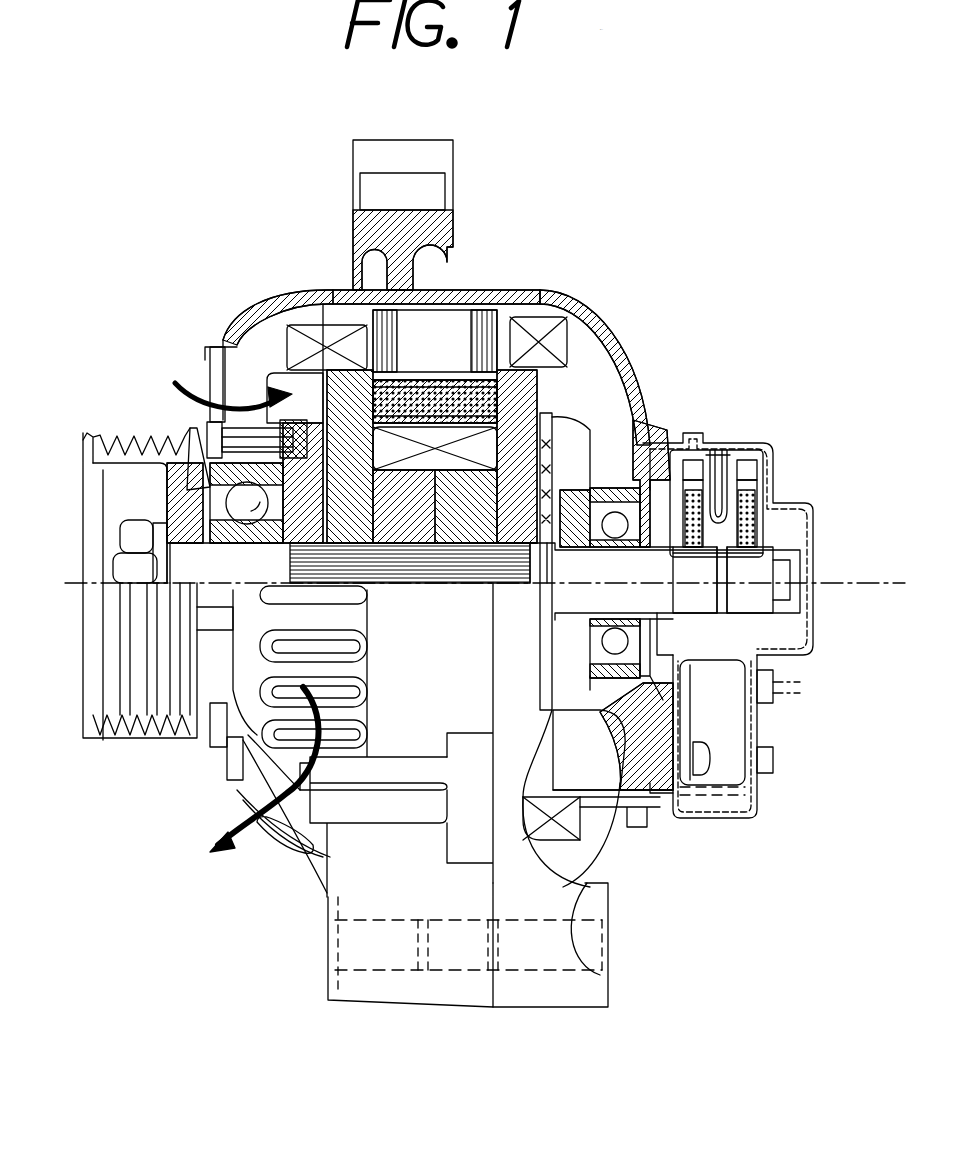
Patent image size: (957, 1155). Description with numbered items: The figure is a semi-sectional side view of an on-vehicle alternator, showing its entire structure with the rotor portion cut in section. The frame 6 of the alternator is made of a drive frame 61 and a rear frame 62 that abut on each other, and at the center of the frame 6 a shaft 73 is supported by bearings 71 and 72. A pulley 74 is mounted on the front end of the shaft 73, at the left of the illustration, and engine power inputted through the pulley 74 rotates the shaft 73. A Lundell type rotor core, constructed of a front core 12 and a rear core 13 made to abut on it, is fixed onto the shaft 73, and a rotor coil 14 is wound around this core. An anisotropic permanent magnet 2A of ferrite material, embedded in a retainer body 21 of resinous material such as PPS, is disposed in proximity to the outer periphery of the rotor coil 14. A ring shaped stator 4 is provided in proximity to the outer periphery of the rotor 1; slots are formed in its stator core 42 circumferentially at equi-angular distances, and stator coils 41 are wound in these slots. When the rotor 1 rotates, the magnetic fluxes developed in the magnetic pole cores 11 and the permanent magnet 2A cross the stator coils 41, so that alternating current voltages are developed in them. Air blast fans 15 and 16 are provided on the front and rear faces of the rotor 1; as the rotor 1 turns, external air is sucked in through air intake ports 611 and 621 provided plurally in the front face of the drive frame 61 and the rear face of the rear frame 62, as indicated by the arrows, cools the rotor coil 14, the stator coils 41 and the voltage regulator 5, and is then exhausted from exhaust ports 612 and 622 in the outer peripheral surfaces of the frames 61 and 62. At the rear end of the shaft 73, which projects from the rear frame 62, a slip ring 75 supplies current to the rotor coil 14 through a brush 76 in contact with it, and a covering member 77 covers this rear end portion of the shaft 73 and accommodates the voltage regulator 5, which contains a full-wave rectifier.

The rotor 1 is at (303, 421).
The anisotropic permanent magnet 2A is at (462, 350).
The stator 4 is at (448, 325).
The voltage regulator 5 is at (717, 740).
The frame 6 is at (209, 810).
The magnetic pole core 11 is at (262, 345).
The front core 12 is at (405, 522).
The rear core 13 is at (460, 522).
The rotor coil 14 is at (640, 392).
The air blast fan 15 is at (620, 820).
The air blast fan 16 is at (223, 332).
The retainer body 21 is at (347, 360).
The stator coil 41 is at (538, 330).
The stator core 42 is at (360, 212).
The drive frame 61 is at (322, 885).
The rear frame 62 is at (565, 877).
The bearing 71 is at (205, 480).
The bearing 72 is at (667, 430).
The shaft 73 is at (300, 553).
The pulley 74 is at (133, 690).
The slip ring 75 is at (757, 563).
The brush 76 is at (703, 503).
The covering member 77 is at (814, 640).
The air intake port 611 is at (220, 397).
The exhaust port 612 is at (287, 292).
The air intake port 621 is at (640, 412).
The exhaust port 622 is at (530, 297).